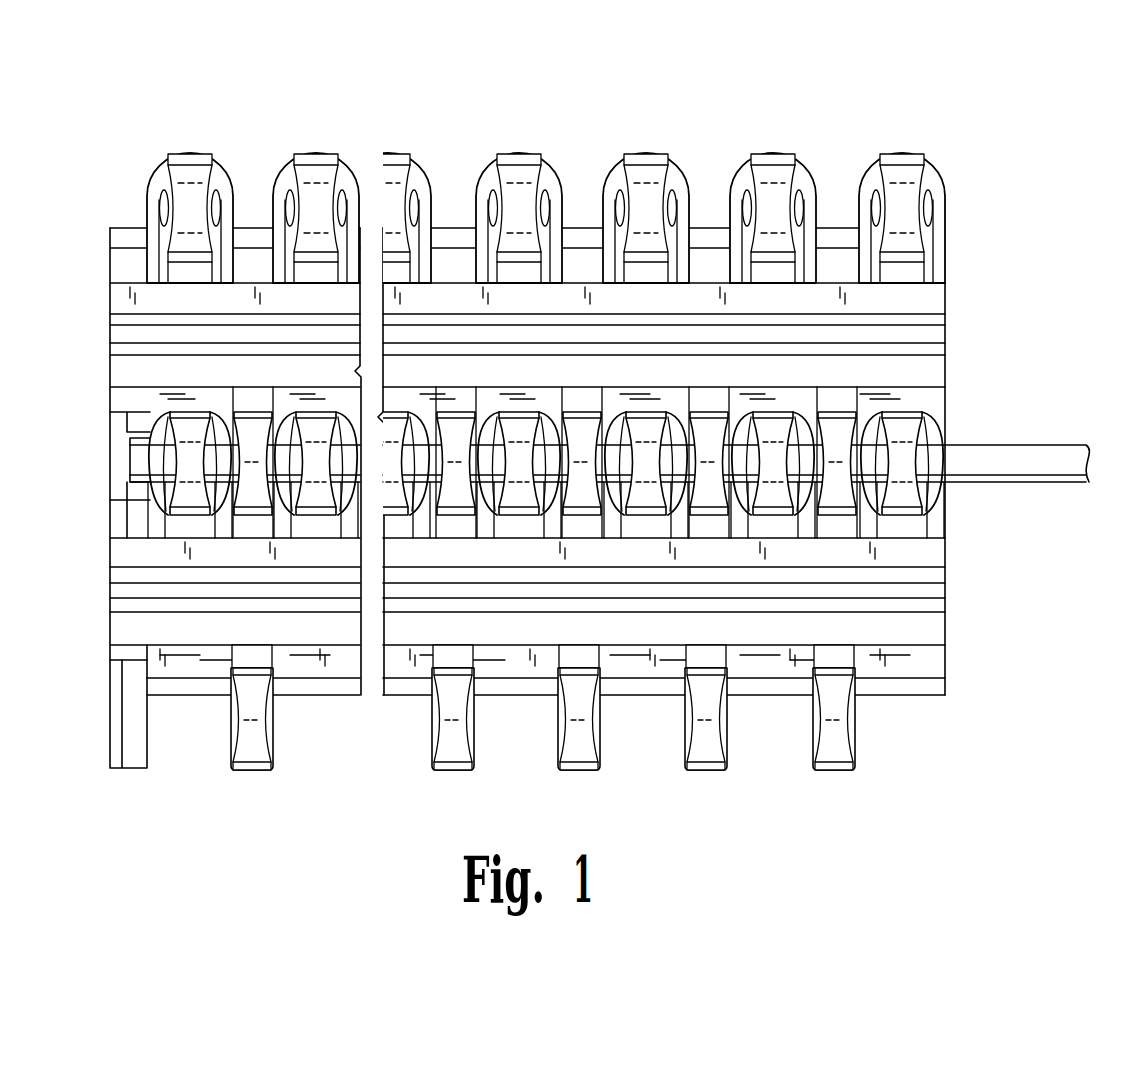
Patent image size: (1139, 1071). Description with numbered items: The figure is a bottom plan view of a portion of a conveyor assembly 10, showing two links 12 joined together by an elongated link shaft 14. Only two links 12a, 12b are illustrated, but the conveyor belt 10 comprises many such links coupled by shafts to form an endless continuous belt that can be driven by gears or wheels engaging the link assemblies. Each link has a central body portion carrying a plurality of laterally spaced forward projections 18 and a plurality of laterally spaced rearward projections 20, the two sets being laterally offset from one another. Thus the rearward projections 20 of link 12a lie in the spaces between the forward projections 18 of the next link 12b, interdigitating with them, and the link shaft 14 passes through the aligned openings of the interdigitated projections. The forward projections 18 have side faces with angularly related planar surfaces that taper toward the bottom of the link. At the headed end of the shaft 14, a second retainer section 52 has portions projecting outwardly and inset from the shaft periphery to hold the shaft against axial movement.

The conveyor assembly 10 is at (972, 148).
The link 12 is at (945, 375).
The link 12a is at (945, 320).
The link 12b is at (945, 603).
The link shaft 14 is at (1032, 485).
The forward projection 18 is at (897, 153).
The rearward projection 20 is at (878, 416).
The second retainer section 52 is at (127, 463).